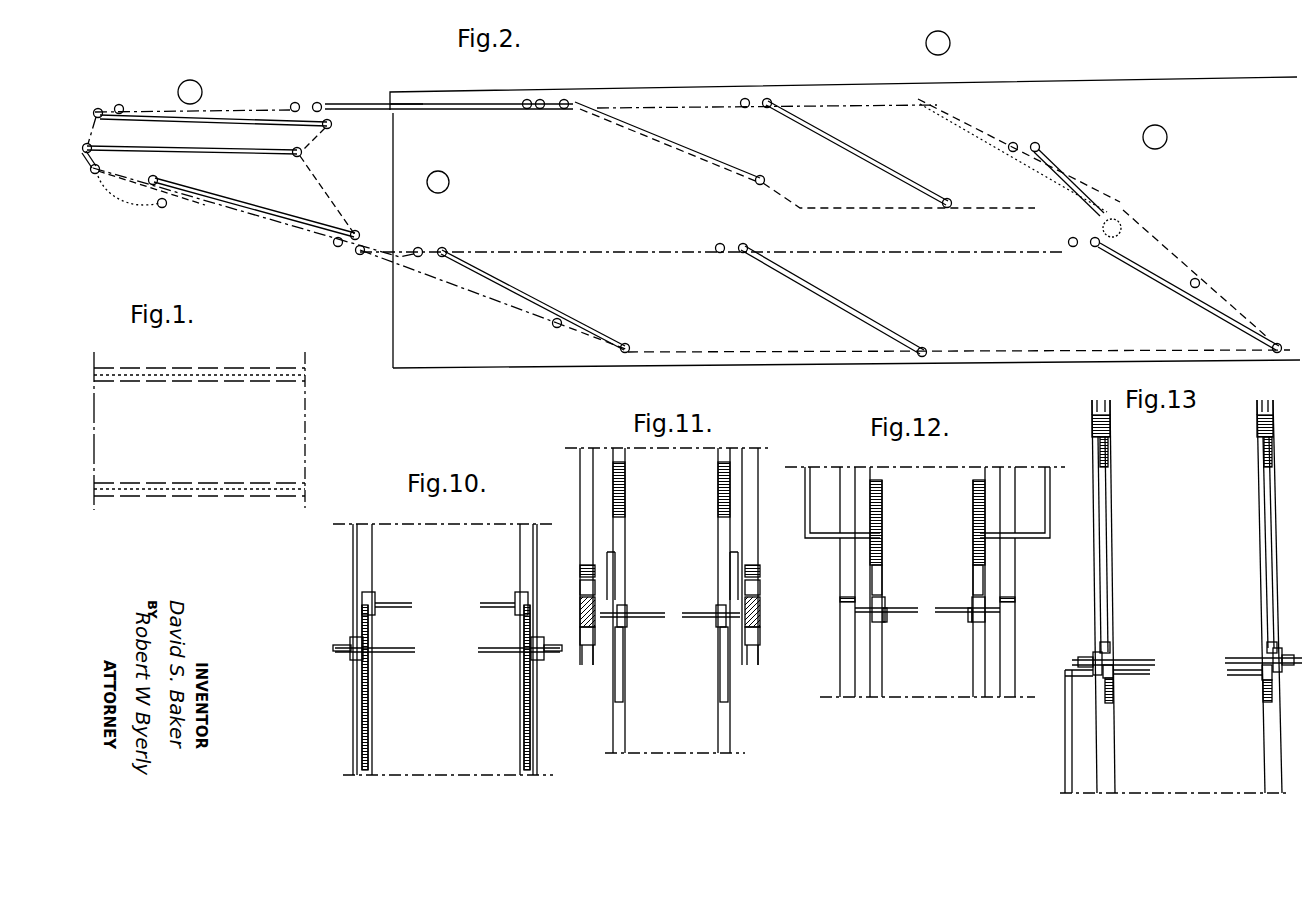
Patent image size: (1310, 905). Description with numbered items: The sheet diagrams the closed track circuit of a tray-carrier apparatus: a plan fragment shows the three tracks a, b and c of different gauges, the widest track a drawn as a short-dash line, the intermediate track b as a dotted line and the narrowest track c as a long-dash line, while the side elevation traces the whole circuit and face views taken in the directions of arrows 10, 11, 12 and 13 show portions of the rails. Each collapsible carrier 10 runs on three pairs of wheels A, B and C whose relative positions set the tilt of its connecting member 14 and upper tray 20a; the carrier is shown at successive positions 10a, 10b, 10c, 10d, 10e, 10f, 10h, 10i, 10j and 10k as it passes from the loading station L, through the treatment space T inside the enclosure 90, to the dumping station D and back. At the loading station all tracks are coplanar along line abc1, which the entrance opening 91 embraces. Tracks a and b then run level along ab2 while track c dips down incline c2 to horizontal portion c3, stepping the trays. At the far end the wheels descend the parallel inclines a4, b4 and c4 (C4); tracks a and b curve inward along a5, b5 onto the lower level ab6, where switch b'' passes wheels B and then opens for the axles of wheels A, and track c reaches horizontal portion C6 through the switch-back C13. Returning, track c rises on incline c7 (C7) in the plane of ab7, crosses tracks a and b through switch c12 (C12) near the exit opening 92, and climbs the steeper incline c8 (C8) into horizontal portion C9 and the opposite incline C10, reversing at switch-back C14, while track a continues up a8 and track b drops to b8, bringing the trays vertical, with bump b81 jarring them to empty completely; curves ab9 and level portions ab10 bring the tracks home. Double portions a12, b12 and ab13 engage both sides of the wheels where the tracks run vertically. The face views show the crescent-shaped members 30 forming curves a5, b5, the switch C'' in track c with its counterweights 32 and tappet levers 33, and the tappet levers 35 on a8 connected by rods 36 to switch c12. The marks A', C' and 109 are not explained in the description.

In FIG. 2, the enclosure 90 is at (706, 86).
In FIG. 2, the entrance opening 91 is at (393, 89).
In FIG. 2, the exit opening 92 is at (425, 248).
In FIG. 2, the collapsible carrier 10 is at (937, 95).
In FIG. 2, the connecting member 11 is at (1120, 190).
In FIG. 2, the viewing arrow 12 is at (403, 217).
In FIG. 2, the viewing arrow 13 is at (143, 165).
In FIG. 2, the loading position of carrier 10a is at (447, 100).
In FIG. 2, the carrier position entering treatment space 10b is at (700, 152).
In FIG. 2, the carrier position in upper treatment space 10c is at (862, 154).
In FIG. 2, the carrier position on inclines 10d is at (1150, 243).
In FIG. 2, the carrier position in lower treatment space 10e is at (1162, 278).
In FIG. 2, the carrier position moving left 10f is at (840, 312).
In FIG. 2, the carrier position on incline ab7 10h is at (480, 296).
In FIG. 2, the dumping position of carrier 10i is at (272, 210).
In FIG. 2, the carrier position returning 10j is at (185, 122).
In FIG. 2, the carrier position at return to loading 10k is at (262, 122).
In FIG. 2, the connecting member 14 is at (412, 102).
In FIG. 2, the upper tray 20a is at (305, 103).
In FIG. 2, the link bar 109 is at (522, 292).
In FIG. 2, the loading station L is at (335, 100).
In FIG. 2, the treatment space T is at (853, 233).
In FIG. 2, the dumping station D is at (143, 164).
In FIG. 2, the pair of wheels A is at (582, 181).
In FIG. 10, the pair of wheels A is at (427, 635).
In FIG. 13, the pair of wheels A is at (1181, 650).
In FIG. 2, the pair of wheels B is at (97, 108).
In FIG. 10, the pair of wheels B is at (370, 594).
In FIG. 13, the pair of wheels B is at (1113, 666).
In FIG. 2, the pair of wheels C is at (770, 247).
In FIG. 11, the pair of wheels C is at (670, 605).
In FIG. 12, the pair of wheels C is at (927, 609).
In FIG. 10, the washer A' is at (432, 662).
In FIG. 13, the washer A' is at (1169, 663).
In FIG. 12, the pin C' is at (897, 630).
In FIG. 2, the automatic switch c11 C'' is at (1069, 182).
In FIG. 11, the automatic switch c11 C'' is at (671, 578).
In FIG. 1, the track a is at (308, 494).
In FIG. 1, the track b is at (212, 432).
In FIG. 1, the track c is at (290, 383).
In FIG. 2, the inclined portion of track a a4 is at (996, 130).
In FIG. 10, the inclined portion of track a a4 is at (356, 720).
In FIG. 2, the curved portion of track a a5 is at (1130, 232).
In FIG. 11, the curved portion of track a a5 is at (757, 664).
In FIG. 2, the inclined portion of track a a8 is at (152, 176).
In FIG. 13, the inclined portion of track a a8 is at (1098, 560).
In FIG. 2, the double portion of track a a12 is at (1128, 214).
In FIG. 2, the inclined portion of track b b4 is at (982, 138).
In FIG. 10, the inclined portion of track b b4 is at (372, 706).
In FIG. 2, the curved portion of track b b5 is at (1122, 222).
In FIG. 11, the curved portion of track b b5 is at (582, 572).
In FIG. 2, the portion of track b b8 is at (130, 182).
In FIG. 13, the portion of track b b8 is at (1108, 570).
In FIG. 2, the double portion of track b b12 is at (1118, 207).
In FIG. 2, the bump b81 is at (162, 208).
In FIG. 2, the automatic switch b11 b'' is at (1063, 227).
In FIG. 11, the automatic switch b11 b'' is at (675, 589).
In FIG. 2, the inclined portion of track c c2 is at (722, 168).
In FIG. 2, the horizontal portion of track c c3 is at (975, 208).
In FIG. 11, the horizontal portion of track c c3 is at (718, 460).
In FIG. 11, the inclined portion of track c c4 is at (718, 492).
In FIG. 12, the inclined portion of track c c7 is at (878, 672).
In FIG. 12, the inclined portion of track c c8 is at (972, 492).
In FIG. 12, the automatic switch c12 is at (883, 578).
In FIG. 2, the inclined portion of track c C4 is at (1240, 320).
In FIG. 2, the horizontal portion of track c C6 is at (993, 352).
In FIG. 2, the inclined portion of track c C7 is at (433, 286).
In FIG. 2, the inclined portion of track c C8 is at (330, 196).
In FIG. 2, the horizontal portion of track c C9 is at (275, 158).
In FIG. 2, the inclined portion of track c C10 is at (320, 138).
In FIG. 2, the automatic switch c12 C12 is at (398, 253).
In FIG. 2, the automatic switch c13 C13 is at (1285, 340).
In FIG. 2, the automatic switch c14 C14 is at (310, 150).
In FIG. 2, the coplanar horizontal portions of tracks a and b ab2 is at (815, 104).
In FIG. 10, the coplanar horizontal portions of tracks a and b ab2 is at (353, 563).
In FIG. 2, the coplanar horizontal portions of tracks a and b ab6 is at (935, 253).
In FIG. 12, the coplanar horizontal portions of tracks a and b ab6 is at (842, 658).
In FIG. 2, the inclined coplanar portions of tracks a and b ab7 is at (258, 228).
In FIG. 12, the inclined coplanar portions of tracks a and b ab7 is at (842, 574).
In FIG. 13, the inclined coplanar portions of tracks a and b ab7 is at (1111, 742).
In FIG. 2, the curved portions of tracks a and b ab9 is at (94, 138).
In FIG. 13, the curved portions of tracks a and b ab9 is at (1110, 424).
In FIG. 2, the coplanar horizontal portions of tracks a and b ab10 is at (235, 108).
In FIG. 2, the double portion of tracks a and b ab13 is at (90, 143).
In FIG. 2, the coplanar horizontal track portion abc1 is at (456, 109).
In FIG. 11, the crescent-shaped member 30 is at (762, 618).
In FIG. 11, the counterweight 32 is at (612, 560).
In FIG. 11, the tappet lever 33 is at (618, 693).
In FIG. 13, the tappet lever 35 is at (1108, 644).
In FIG. 11, the rod 36 is at (805, 494).
In FIG. 12, the rod 36 is at (805, 492).
In FIG. 13, the rod 36 is at (1065, 748).